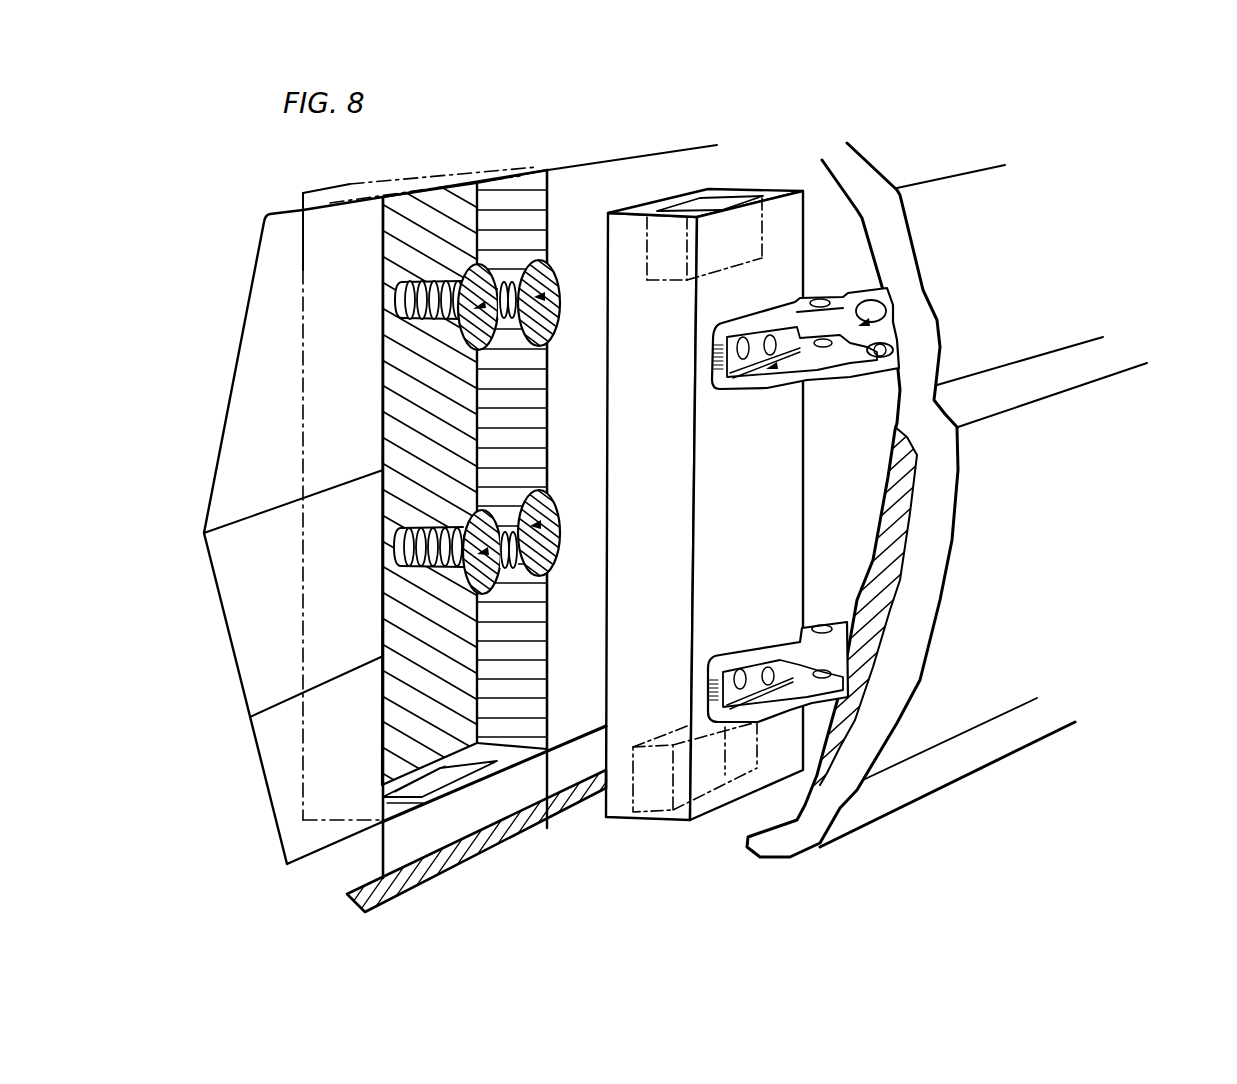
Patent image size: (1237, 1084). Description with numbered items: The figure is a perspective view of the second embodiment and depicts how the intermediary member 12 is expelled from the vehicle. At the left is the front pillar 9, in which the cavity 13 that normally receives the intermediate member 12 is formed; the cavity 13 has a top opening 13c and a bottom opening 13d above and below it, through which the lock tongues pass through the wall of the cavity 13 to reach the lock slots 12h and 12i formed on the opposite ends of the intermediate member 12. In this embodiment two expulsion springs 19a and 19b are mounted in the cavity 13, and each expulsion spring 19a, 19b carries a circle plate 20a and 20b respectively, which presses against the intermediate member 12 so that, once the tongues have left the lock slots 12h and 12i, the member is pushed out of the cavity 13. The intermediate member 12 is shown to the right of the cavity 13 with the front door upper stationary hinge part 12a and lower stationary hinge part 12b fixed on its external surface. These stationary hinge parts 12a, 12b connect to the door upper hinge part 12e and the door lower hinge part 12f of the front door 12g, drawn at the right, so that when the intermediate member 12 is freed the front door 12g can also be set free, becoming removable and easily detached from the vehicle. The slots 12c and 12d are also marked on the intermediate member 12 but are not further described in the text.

The front pillar 9 is at (268, 534).
The intermediate member 12 is at (740, 511).
The upper stationary hinge part 12a is at (897, 359).
The lower stationary hinge part 12b is at (757, 700).
The upper slot 12c is at (718, 197).
The lower slot 12d is at (662, 798).
The door upper hinge part 12e is at (883, 288).
The door lower hinge part 12f is at (890, 565).
The front door 12g is at (997, 227).
The lock slot 12h is at (717, 232).
The lock slot 12i is at (893, 772).
The cavity 13 is at (536, 522).
The top opening 13c is at (432, 178).
The bottom opening 13d is at (450, 772).
The expulsion spring 19a is at (422, 327).
The expulsion spring 19b is at (423, 568).
The circle plate 20a is at (608, 273).
The circle plate 20b is at (500, 577).